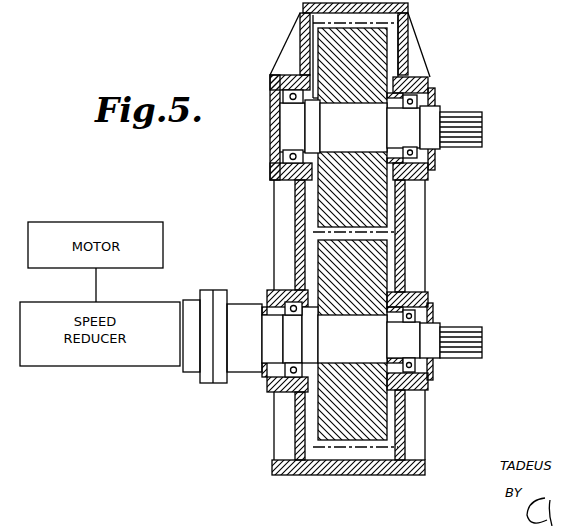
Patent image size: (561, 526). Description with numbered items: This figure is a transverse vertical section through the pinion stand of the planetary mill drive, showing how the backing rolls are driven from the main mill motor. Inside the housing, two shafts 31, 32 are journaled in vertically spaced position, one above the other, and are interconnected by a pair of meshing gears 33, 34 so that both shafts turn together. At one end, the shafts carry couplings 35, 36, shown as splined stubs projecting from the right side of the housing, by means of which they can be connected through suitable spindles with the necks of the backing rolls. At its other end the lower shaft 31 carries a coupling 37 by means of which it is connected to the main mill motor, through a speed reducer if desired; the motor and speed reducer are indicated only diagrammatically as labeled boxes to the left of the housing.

The shaft 31 is at (351, 339).
The shaft 32 is at (360, 126).
The gear 33 is at (378, 267).
The gear 34 is at (377, 50).
The coupling 35 is at (460, 325).
The coupling 36 is at (465, 112).
The coupling 37 is at (247, 306).